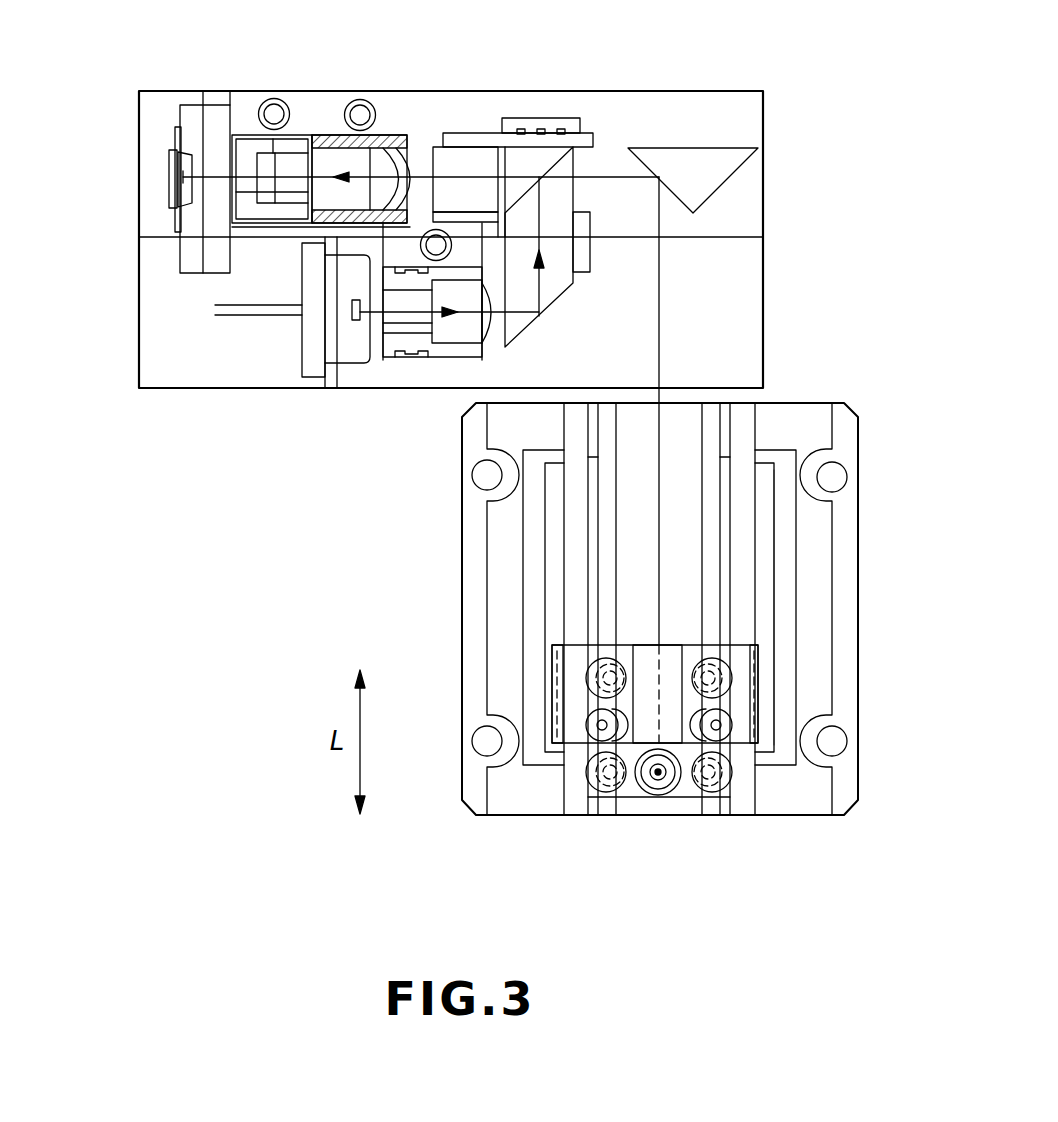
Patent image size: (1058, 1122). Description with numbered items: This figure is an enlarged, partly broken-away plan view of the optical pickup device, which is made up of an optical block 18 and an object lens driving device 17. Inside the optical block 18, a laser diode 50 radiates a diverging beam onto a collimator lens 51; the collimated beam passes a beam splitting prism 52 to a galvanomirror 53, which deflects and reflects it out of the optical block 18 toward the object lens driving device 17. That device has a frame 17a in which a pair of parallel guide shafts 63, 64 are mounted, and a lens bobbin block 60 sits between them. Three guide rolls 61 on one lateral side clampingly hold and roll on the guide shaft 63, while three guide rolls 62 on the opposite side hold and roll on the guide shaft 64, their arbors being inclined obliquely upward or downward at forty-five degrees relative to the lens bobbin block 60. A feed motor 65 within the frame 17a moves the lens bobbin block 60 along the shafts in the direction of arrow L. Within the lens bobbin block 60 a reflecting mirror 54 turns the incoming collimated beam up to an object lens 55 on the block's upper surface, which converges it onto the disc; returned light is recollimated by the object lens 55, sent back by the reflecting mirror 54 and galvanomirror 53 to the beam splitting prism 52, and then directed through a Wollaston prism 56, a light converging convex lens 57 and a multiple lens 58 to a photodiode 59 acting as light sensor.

The object lens driving device 17 is at (862, 438).
The frame 17a is at (460, 492).
The optical block 18 is at (697, 92).
The laser diode 50 is at (345, 378).
The collimator lens 51 is at (465, 297).
The beam splitting prism 52 is at (555, 290).
The galvanomirror 53 is at (722, 163).
The reflecting mirror 54 is at (683, 795).
The object lens 55 is at (658, 785).
The Wollaston prism 56 is at (474, 164).
The light converging convex lens 57 is at (398, 162).
The multiple lens 58 is at (263, 165).
The photodiode 59 is at (182, 157).
The lens bobbin block 60 is at (690, 640).
The guide rolls 61 is at (710, 680).
The guide rolls 62 is at (625, 640).
The guide shaft 63 is at (712, 545).
The guide shaft 64 is at (605, 540).
The feed motor 65 is at (778, 722).